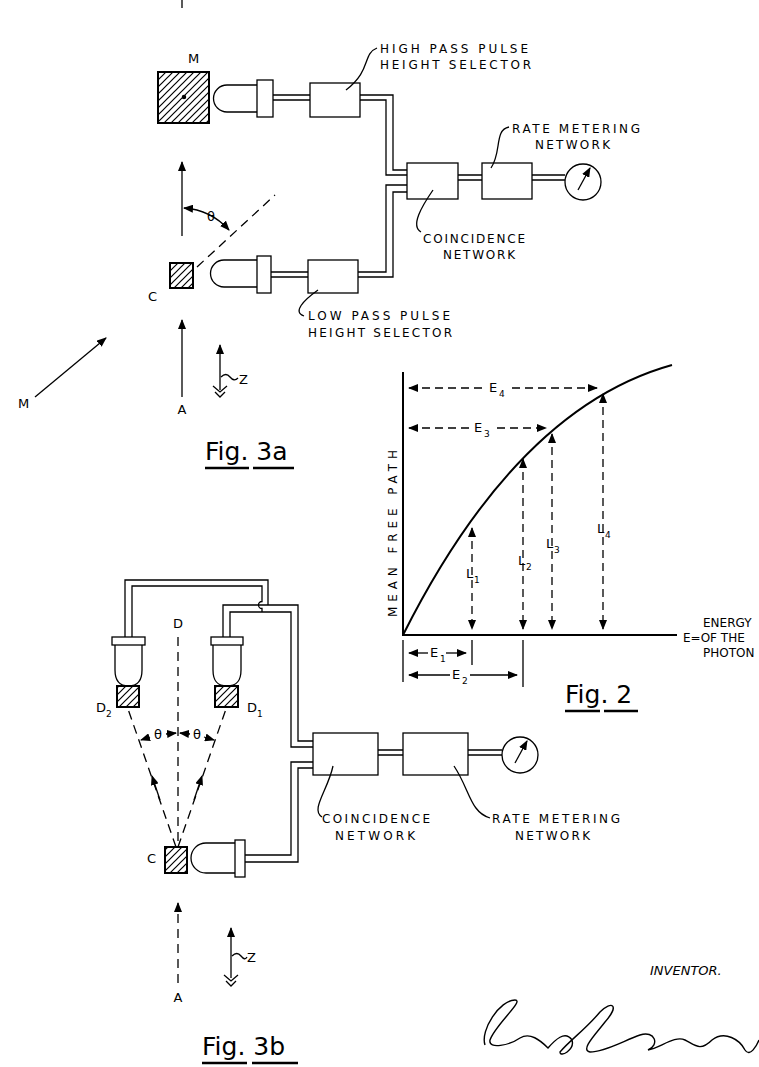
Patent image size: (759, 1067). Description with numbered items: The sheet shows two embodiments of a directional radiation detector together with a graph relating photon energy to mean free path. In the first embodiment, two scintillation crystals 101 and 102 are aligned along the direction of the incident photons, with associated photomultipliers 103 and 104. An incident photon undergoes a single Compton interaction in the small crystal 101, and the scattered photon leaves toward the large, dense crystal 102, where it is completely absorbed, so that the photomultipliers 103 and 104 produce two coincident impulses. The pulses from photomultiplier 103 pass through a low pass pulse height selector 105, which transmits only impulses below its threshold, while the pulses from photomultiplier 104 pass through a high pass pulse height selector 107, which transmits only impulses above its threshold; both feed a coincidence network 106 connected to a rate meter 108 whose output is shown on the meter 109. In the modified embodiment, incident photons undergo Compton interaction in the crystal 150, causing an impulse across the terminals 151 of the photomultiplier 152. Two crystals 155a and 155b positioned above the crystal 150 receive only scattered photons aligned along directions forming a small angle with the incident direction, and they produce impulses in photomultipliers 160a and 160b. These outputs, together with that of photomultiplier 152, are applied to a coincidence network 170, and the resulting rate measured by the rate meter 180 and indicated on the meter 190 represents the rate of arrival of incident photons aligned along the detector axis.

In FIG. 3A, the scintillation crystal 101 is at (170, 267).
In FIG. 3A, the scintillation crystal 102 is at (158, 88).
In FIG. 3A, the photomultiplier 103 is at (243, 276).
In FIG. 3A, the photomultiplier 104 is at (233, 91).
In FIG. 3A, the low pass pulse height selector 105 is at (318, 262).
In FIG. 3A, the coincidence network 106 is at (416, 172).
In FIG. 3A, the high pass pulse height selector 107 is at (320, 83).
In FIG. 3A, the rate meter 108 is at (504, 192).
In FIG. 3A, the meter 109 is at (586, 192).
In FIG. 3B, the crystal 150 is at (165, 870).
In FIG. 3B, the terminals 151 is at (265, 861).
In FIG. 3B, the photomultiplier 152 is at (207, 858).
In FIG. 3B, the crystal 155a is at (238, 695).
In FIG. 3B, the crystal 155b is at (117, 690).
In FIG. 3B, the photomultiplier 160a is at (233, 660).
In FIG. 3B, the photomultiplier 160b is at (118, 652).
In FIG. 3B, the coincidence network 170 is at (342, 733).
In FIG. 3B, the rate meter 180 is at (432, 768).
In FIG. 3B, the meter 190 is at (524, 770).